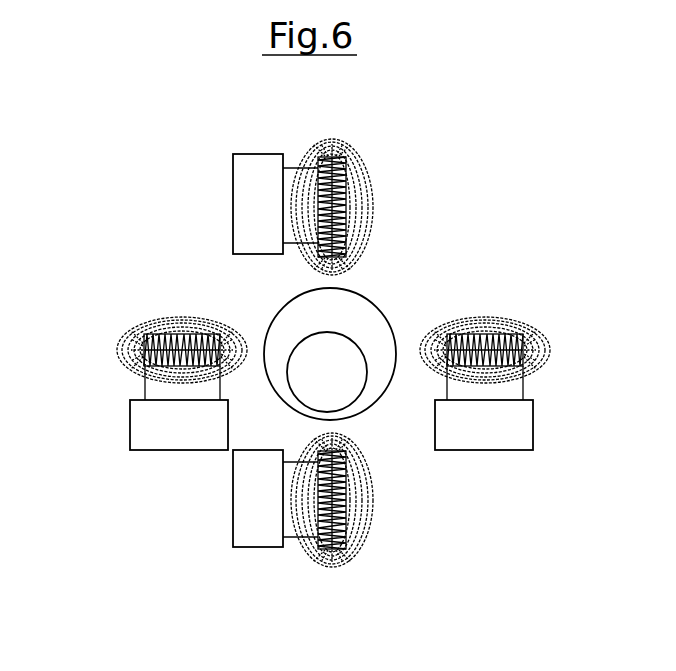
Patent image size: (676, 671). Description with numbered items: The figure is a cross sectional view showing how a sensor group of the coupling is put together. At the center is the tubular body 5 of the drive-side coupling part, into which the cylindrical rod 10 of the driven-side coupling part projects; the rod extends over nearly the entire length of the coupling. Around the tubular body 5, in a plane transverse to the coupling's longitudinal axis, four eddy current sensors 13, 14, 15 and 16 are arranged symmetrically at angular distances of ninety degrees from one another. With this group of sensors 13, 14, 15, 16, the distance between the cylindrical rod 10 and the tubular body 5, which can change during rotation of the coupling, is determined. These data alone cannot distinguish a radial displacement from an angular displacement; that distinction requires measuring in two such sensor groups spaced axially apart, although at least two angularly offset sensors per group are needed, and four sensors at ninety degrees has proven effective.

The tubular body 5 is at (370, 302).
The cylindrical rod 10 is at (365, 358).
The eddy current sensor 13 is at (523, 392).
The eddy current sensor 14 is at (290, 540).
The eddy current sensor 15 is at (144, 390).
The eddy current sensor 16 is at (292, 167).